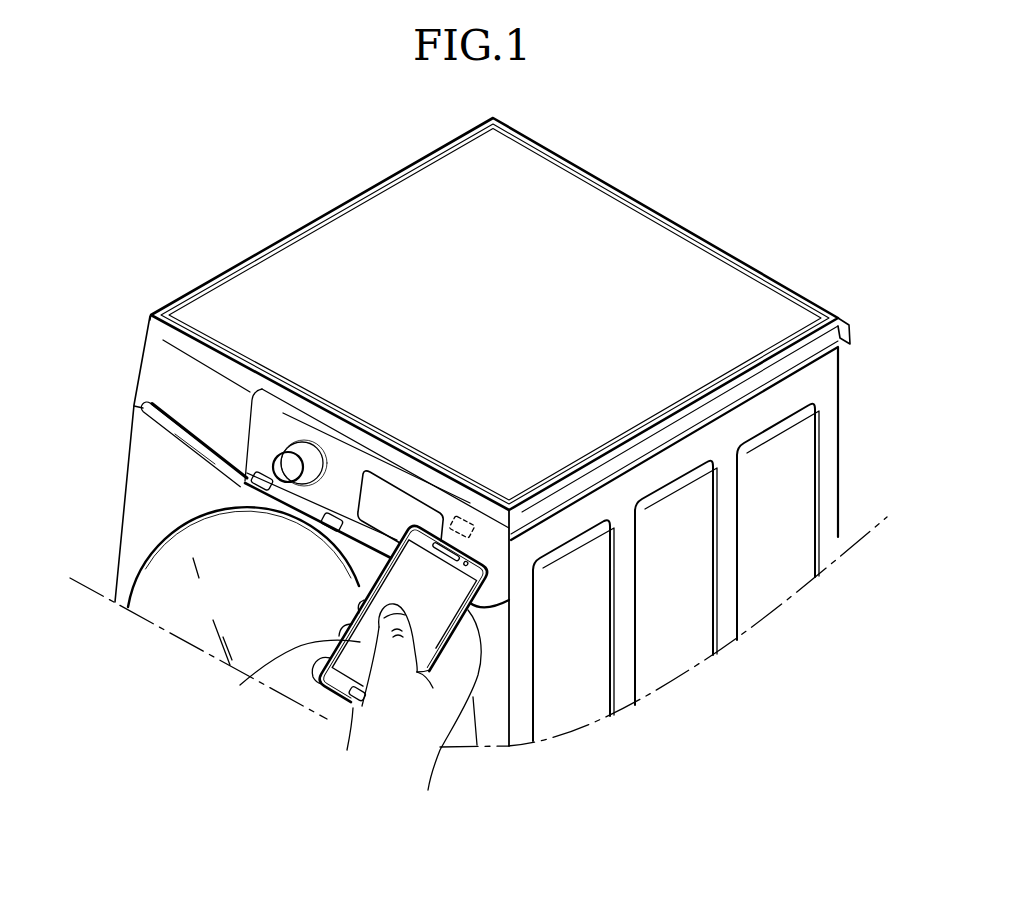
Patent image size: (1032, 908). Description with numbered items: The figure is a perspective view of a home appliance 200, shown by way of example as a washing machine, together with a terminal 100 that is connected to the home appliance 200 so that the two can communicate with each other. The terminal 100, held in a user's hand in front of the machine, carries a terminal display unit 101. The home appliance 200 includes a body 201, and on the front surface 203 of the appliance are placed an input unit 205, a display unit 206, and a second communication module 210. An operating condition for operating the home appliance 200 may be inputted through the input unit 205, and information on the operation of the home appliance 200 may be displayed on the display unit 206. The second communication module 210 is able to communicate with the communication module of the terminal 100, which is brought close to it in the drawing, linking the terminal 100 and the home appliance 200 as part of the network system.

The terminal 100 is at (322, 706).
The terminal display unit 101 is at (360, 643).
The home appliance 200 is at (225, 228).
The body 201 is at (337, 253).
The front surface 203 is at (138, 470).
The input unit 205 is at (298, 450).
The display unit 206 is at (389, 498).
The second communication module 210 is at (462, 515).